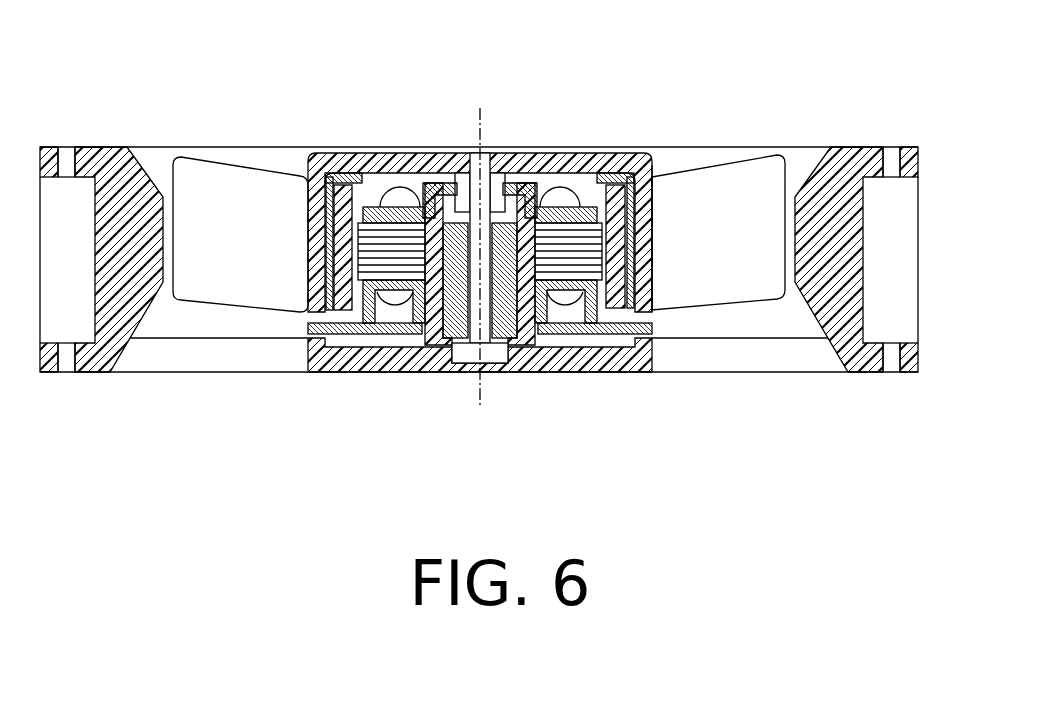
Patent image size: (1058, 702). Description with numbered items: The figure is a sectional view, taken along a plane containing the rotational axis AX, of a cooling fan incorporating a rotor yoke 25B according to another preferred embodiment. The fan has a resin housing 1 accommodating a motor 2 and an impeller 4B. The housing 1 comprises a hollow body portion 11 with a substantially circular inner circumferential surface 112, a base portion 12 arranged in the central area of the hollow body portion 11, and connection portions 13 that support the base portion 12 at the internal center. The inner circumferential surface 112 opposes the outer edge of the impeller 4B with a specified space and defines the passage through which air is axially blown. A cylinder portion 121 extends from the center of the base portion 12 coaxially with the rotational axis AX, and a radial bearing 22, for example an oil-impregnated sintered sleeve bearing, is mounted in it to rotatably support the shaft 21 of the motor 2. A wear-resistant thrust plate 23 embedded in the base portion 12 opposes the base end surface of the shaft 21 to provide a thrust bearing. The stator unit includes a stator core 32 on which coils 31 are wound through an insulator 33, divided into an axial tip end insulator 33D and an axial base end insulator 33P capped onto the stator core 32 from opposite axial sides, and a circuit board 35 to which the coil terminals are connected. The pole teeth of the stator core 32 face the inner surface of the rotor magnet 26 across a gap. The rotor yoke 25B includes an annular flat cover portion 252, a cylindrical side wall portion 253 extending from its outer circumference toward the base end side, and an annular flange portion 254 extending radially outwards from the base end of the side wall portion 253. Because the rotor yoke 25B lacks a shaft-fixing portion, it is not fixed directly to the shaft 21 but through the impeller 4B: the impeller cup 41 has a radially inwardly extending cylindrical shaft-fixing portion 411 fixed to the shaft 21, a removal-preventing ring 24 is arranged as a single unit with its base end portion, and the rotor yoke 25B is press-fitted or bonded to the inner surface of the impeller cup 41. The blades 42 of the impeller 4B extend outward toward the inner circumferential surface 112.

The housing 1 is at (862, 165).
The motor 2 is at (613, 75).
The hollow body portion 11 is at (113, 363).
The base portion 12 is at (612, 363).
The connection portions 13 is at (198, 362).
The inner circumferential surface 112 is at (796, 185).
The impeller 4B is at (777, 81).
The impeller cup 41 is at (652, 178).
The blade 42 is at (757, 178).
The shaft 21 is at (483, 343).
The radial bearing 22 is at (530, 340).
The thrust plate 23 is at (463, 352).
The removal-preventing ring 24 is at (503, 185).
The rotor yoke 25B is at (283, 81).
The cover portion 252 is at (348, 176).
The side wall portion 253 is at (331, 185).
The flange portion 254 is at (308, 293).
The rotor magnet 26 is at (613, 200).
The coils 31 is at (560, 197).
The stator core 32 is at (590, 193).
The insulator 33 is at (526, 258).
The axial tip end insulator 33D is at (527, 190).
The axial base end insulator 33P is at (612, 333).
The circuit board 35 is at (382, 332).
The cylinder portion 121 is at (558, 363).
The shaft-fixing portion 411 is at (465, 180).
The rotational axis AX is at (480, 108).